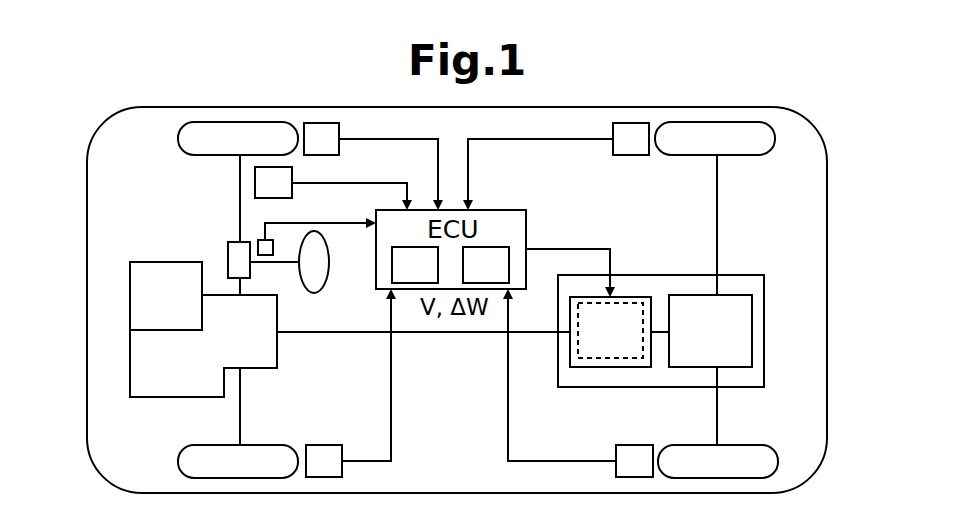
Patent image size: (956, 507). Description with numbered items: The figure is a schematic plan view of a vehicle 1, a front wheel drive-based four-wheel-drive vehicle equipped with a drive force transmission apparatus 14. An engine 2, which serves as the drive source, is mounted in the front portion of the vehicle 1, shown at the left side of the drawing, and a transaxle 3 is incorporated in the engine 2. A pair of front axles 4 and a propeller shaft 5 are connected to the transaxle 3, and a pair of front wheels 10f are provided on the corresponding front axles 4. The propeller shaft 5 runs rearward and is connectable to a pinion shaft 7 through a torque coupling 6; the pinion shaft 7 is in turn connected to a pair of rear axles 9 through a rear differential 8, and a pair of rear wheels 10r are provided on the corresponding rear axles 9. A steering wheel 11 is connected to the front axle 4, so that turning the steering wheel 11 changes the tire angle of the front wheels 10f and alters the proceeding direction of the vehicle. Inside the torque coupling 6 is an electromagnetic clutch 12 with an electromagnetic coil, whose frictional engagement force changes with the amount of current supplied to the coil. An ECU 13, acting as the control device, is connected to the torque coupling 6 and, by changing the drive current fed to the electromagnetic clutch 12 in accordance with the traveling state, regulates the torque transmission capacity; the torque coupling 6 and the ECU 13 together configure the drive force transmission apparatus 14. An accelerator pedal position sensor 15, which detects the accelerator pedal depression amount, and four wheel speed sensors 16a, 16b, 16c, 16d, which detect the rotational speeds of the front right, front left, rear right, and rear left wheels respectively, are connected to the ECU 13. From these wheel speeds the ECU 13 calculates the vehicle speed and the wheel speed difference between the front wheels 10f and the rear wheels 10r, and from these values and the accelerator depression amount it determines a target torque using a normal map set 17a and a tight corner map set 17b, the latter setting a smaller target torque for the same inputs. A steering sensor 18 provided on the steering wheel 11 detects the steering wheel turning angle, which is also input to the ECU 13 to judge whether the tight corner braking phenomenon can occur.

The vehicle 1 is at (812, 123).
The engine 2 is at (145, 262).
The transaxle 3 is at (147, 397).
The front axle 4 is at (240, 186).
The propeller shaft 5 is at (442, 334).
The torque coupling 6 is at (590, 297).
The pinion shaft 7 is at (657, 332).
The rear differential 8 is at (752, 330).
The rear axle 9 is at (717, 181).
The front wheel 10f is at (207, 122).
The rear wheel 10r is at (748, 122).
The steering wheel 11 is at (322, 283).
The electromagnetic clutch 12 is at (628, 303).
The ECU 13 is at (526, 226).
The drive force transmission apparatus 14 is at (662, 279).
The accelerator pedal position sensor 15 is at (275, 167).
The wheel speed sensor 16a is at (320, 123).
The wheel speed sensor 16b is at (320, 445).
The wheel speed sensor 16c is at (631, 123).
The wheel speed sensor 16d is at (633, 445).
The normal map set 17a is at (392, 262).
The tight corner map set 17b is at (509, 272).
The steering sensor 18 is at (260, 239).